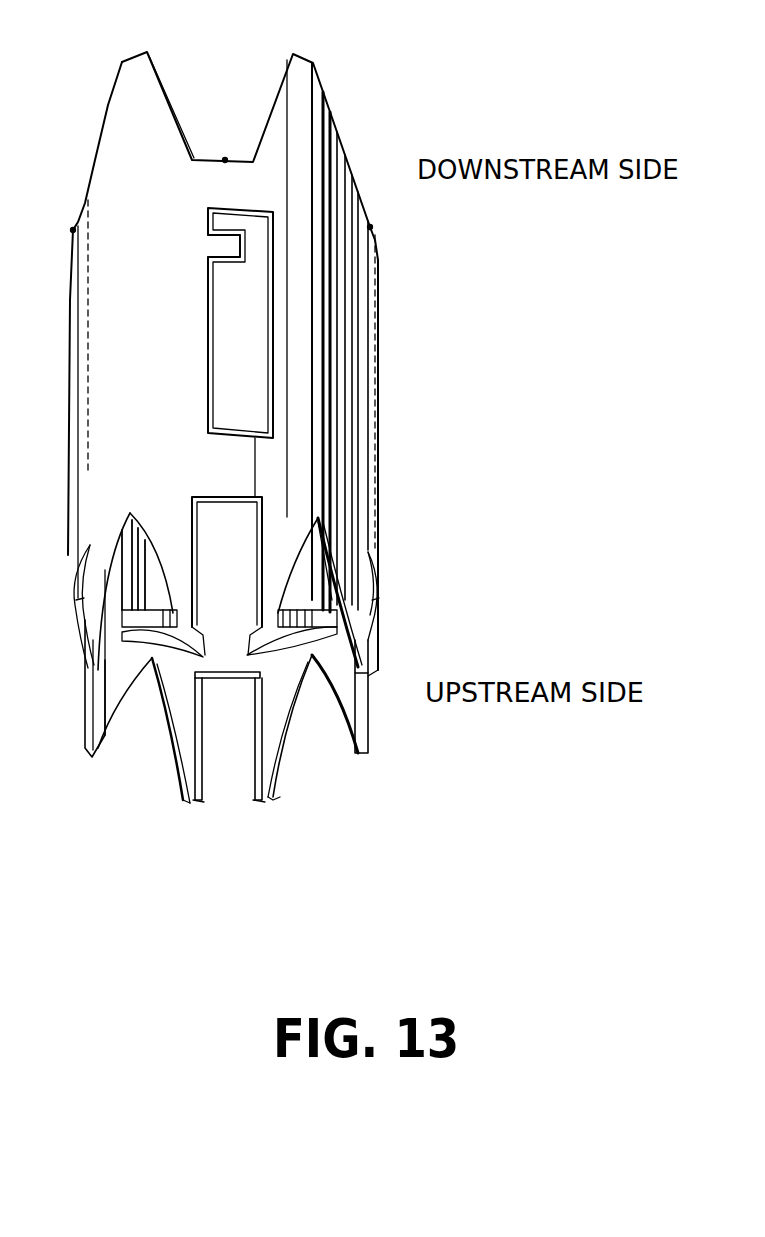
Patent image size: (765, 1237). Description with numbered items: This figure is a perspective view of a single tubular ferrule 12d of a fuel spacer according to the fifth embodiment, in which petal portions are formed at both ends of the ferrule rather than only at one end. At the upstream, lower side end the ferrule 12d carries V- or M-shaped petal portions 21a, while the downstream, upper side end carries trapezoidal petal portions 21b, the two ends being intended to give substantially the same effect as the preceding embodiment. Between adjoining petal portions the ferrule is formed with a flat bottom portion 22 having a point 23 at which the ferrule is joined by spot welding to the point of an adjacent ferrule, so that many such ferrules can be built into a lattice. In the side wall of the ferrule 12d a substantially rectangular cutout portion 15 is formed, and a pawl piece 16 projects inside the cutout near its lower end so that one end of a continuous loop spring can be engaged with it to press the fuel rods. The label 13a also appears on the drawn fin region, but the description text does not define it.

The tubular ferrule 12d is at (356, 404).
The fin portion 13a is at (340, 553).
The cutout portion 15 is at (250, 367).
The pawl piece 16 is at (232, 245).
The petal portions 21a is at (380, 775).
The petal portions 21b is at (310, 67).
The flat bottom portion 22 is at (203, 680).
The point 23 is at (227, 680).